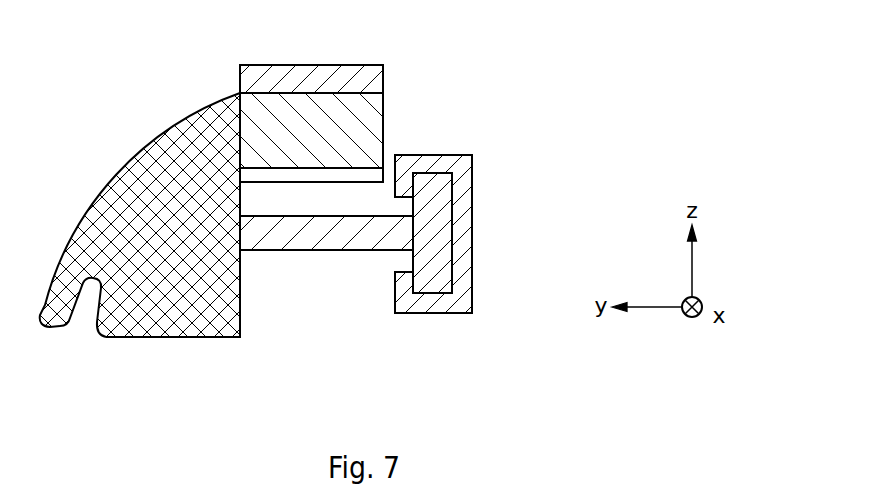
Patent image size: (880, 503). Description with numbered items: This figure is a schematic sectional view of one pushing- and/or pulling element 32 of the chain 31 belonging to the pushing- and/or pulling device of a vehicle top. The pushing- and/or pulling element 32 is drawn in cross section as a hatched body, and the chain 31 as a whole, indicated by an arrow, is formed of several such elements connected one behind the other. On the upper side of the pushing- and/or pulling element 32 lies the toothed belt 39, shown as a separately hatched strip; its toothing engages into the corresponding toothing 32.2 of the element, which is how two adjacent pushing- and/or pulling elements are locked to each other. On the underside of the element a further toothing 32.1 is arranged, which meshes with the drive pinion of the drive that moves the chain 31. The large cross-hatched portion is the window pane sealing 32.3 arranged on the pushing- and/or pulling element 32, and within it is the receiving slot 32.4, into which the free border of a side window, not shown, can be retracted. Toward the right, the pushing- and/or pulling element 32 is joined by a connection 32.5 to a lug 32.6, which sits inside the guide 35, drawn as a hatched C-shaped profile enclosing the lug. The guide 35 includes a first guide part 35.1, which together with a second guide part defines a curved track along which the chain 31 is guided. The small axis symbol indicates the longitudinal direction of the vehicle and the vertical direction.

The chain 31 is at (317, 197).
The pushing- and/or pulling element 32 is at (292, 205).
The further toothing 32.1 is at (283, 175).
The toothing 32.2 is at (355, 90).
The window pane sealing 32.3 is at (127, 177).
The receiving slot 32.4 is at (87, 308).
The connection 32.5 is at (350, 238).
The lug 32.6 is at (443, 198).
The guide 35 is at (495, 234).
The first guide part 35.1 is at (460, 225).
The toothed belt 39 is at (312, 78).